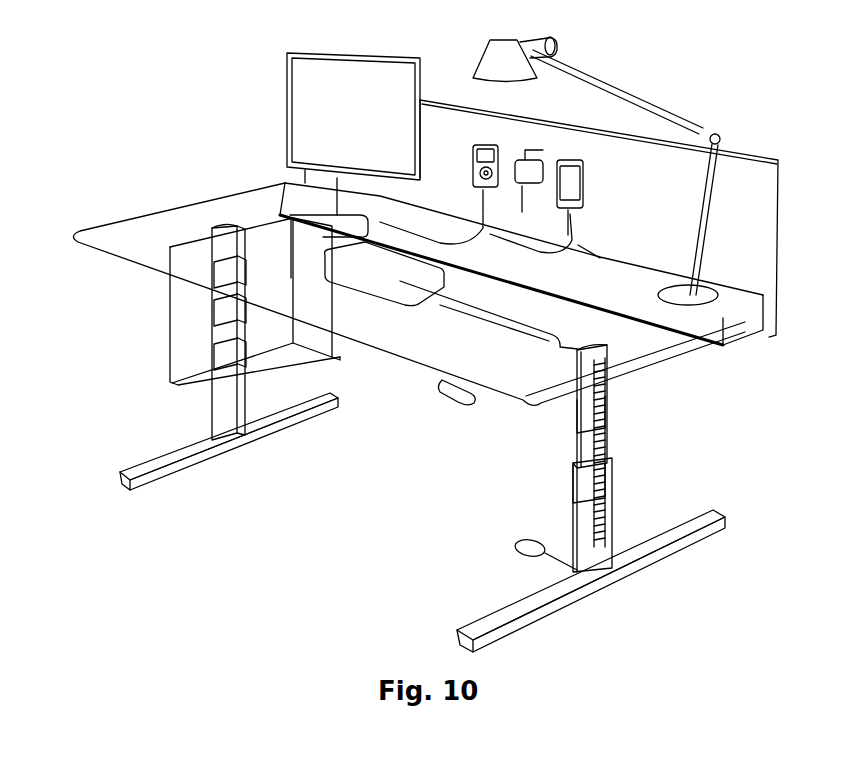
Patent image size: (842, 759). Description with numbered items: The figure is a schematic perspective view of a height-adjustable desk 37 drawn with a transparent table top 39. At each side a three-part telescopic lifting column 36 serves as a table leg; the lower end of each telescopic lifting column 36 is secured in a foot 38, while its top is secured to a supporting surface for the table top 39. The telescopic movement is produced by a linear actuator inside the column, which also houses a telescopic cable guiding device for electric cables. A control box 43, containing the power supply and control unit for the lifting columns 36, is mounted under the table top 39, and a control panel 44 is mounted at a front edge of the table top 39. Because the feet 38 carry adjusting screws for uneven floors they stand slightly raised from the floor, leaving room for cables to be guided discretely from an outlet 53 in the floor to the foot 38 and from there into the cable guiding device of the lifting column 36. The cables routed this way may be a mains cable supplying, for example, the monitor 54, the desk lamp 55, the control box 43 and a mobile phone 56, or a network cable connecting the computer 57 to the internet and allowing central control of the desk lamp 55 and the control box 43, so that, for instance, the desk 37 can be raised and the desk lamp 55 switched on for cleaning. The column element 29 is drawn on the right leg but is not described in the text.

The telescoping leg column 29 is at (608, 427).
The telescopic lifting column 36 is at (207, 420).
The desk 37 is at (197, 157).
The foot 38 is at (120, 478).
The table top 39 is at (136, 229).
The control box 43 is at (402, 288).
The control panel 44 is at (467, 399).
The outlet 53 is at (518, 544).
The monitor 54 is at (317, 108).
The desk lamp 55 is at (637, 96).
The mobile phone 56 is at (570, 166).
The computer 57 is at (192, 324).